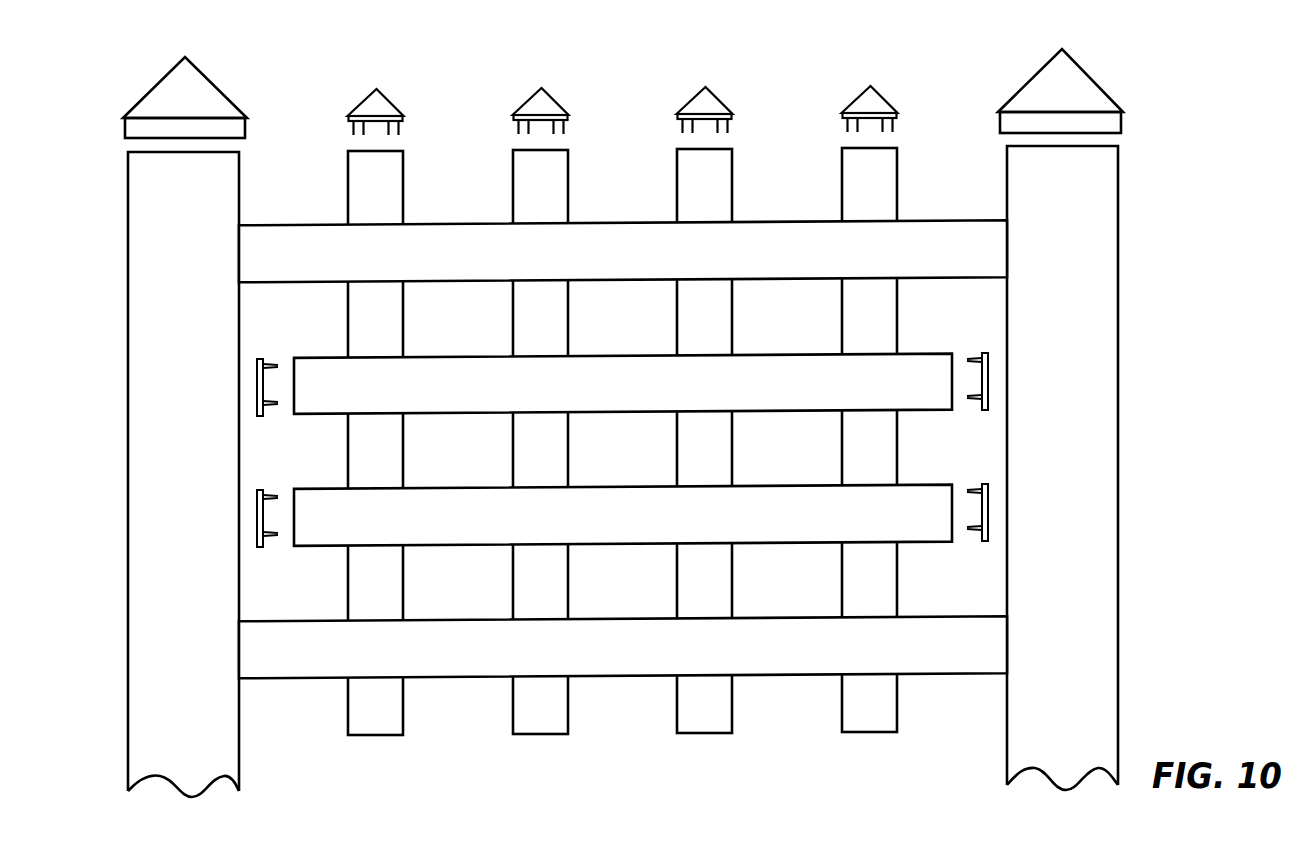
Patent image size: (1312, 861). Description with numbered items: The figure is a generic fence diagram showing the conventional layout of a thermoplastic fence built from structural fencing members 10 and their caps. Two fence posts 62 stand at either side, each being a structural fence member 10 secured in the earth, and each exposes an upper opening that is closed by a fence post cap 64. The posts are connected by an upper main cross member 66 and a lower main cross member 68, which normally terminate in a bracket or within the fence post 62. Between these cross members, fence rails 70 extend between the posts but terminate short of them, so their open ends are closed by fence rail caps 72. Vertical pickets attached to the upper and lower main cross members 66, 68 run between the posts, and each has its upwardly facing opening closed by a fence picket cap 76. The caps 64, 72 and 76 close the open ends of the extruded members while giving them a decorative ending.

The structural fencing member 10 is at (623, 414).
The fence post 62 is at (623, 471).
The fence post cap 64 is at (198, 84).
The upper main cross member 66 is at (462, 265).
The lower main cross member 68 is at (445, 670).
The fence rail 70 is at (467, 400).
The fence rail cap 72 is at (256, 395).
The fence picket cap 76 is at (367, 103).